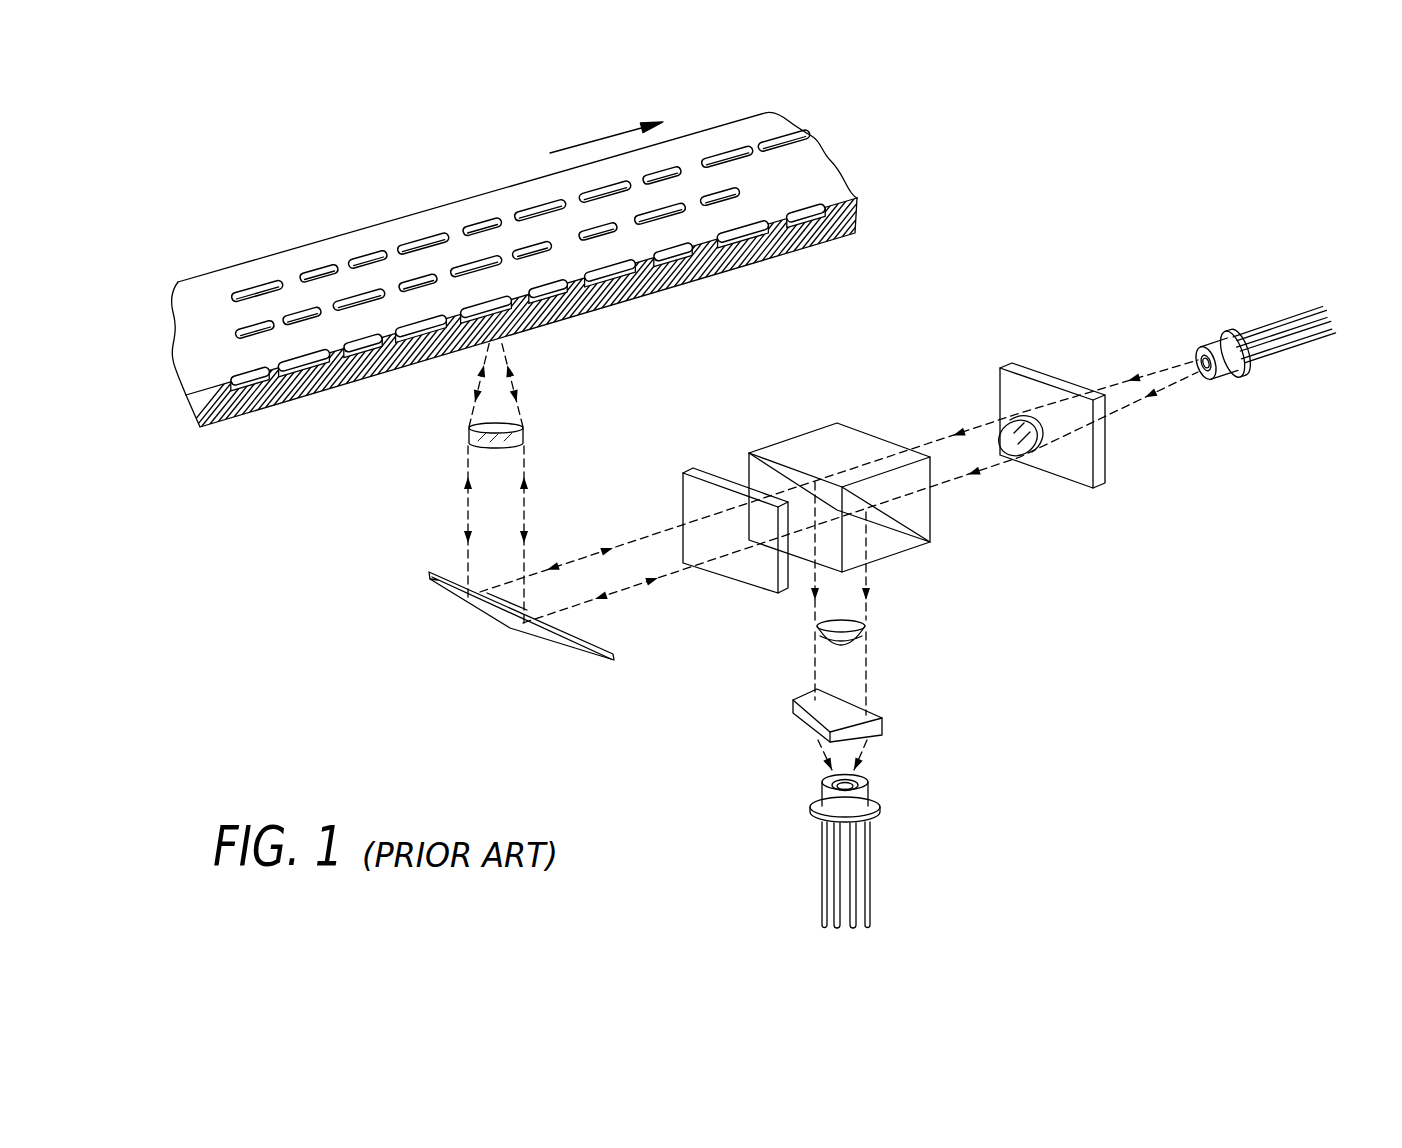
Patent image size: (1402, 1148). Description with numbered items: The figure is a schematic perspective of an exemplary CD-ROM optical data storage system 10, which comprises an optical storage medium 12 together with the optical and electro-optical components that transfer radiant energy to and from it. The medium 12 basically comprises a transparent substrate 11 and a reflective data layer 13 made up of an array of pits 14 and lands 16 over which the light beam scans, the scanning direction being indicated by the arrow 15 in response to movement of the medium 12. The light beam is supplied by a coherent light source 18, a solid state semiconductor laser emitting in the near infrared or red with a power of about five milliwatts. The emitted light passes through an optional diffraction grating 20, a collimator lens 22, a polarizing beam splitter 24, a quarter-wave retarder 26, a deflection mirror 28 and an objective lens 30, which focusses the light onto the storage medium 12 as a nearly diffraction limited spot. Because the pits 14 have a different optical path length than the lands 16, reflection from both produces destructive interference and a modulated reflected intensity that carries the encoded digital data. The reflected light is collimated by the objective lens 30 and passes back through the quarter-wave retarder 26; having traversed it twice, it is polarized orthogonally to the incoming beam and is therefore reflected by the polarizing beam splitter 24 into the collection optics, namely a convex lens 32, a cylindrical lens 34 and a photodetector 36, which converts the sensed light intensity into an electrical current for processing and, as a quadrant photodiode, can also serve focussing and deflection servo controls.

The optical scanning system 10 is at (1075, 188).
The transparent substrate 11 is at (262, 400).
The optical storage medium 12 is at (470, 196).
The reflective data layer 13 is at (170, 370).
The pits 14 is at (752, 240).
The arrow 15 is at (600, 137).
The lands 16 is at (705, 256).
The coherent light source 18 is at (1248, 372).
The diffraction grating 20 is at (1105, 478).
The collimator lens 22 is at (1018, 452).
The polarizing beam splitter 24 is at (932, 532).
The quarter-wave retarder 26 is at (764, 582).
The deflection mirror 28 is at (556, 640).
The objective lens 30 is at (475, 447).
The convex lens 32 is at (866, 640).
The cylindrical lens 34 is at (880, 715).
The photodetector 36 is at (880, 806).